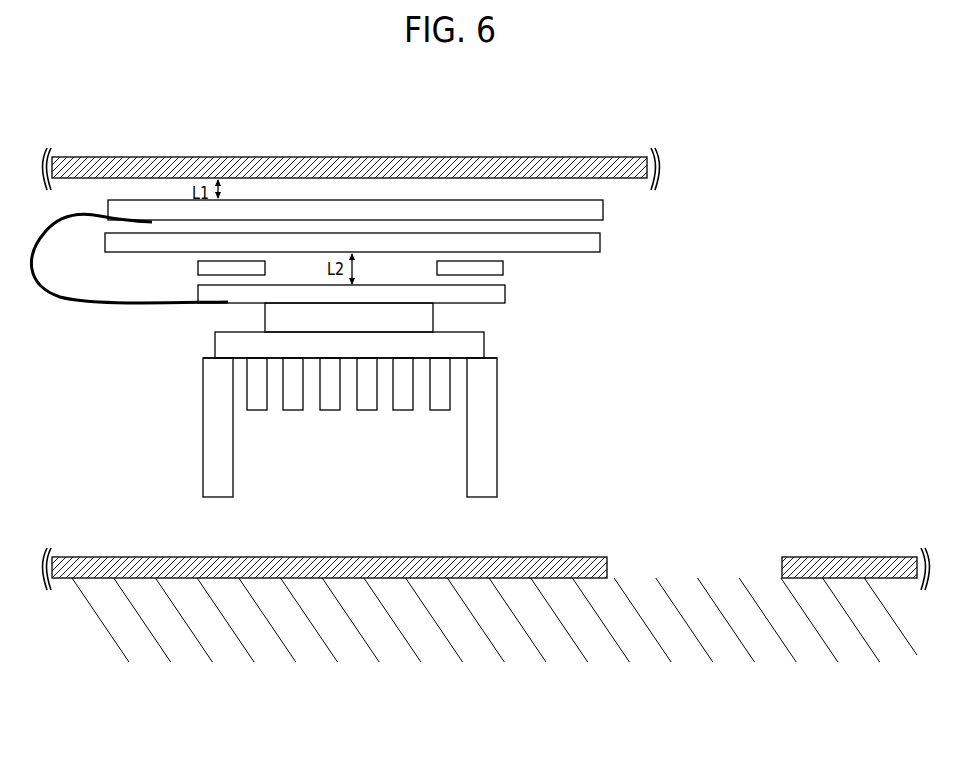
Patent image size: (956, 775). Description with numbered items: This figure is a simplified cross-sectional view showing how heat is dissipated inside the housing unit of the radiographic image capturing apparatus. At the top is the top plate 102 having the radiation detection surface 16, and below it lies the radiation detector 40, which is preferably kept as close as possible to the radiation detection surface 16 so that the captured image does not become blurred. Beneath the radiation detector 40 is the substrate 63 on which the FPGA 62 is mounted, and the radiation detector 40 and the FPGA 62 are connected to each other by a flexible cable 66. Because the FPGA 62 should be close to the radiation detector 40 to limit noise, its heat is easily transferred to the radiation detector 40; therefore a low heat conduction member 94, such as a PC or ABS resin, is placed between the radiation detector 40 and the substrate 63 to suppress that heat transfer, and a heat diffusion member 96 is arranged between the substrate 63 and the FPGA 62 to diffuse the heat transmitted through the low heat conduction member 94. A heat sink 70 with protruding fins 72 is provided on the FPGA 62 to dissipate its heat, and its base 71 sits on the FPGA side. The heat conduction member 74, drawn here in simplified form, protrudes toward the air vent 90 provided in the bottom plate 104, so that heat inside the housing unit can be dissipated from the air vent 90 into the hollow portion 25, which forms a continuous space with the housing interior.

The radiation detection surface 16 is at (351, 129).
The top plate 102 is at (125, 157).
The radiation detector 40 is at (593, 215).
The low heat conduction member 94 is at (597, 242).
The heat diffusion member 96 is at (487, 268).
The substrate 63 is at (498, 292).
The FPGA 62 is at (423, 318).
The heat sink base 71 is at (215, 346).
The heat sink 70 is at (415, 427).
The fins 72 is at (437, 400).
The heat conduction member 74 is at (498, 425).
The flexible cable 66 is at (97, 297).
The bottom plate 104 is at (330, 570).
The hollow portion 25 is at (738, 620).
The air vent 90 is at (672, 575).